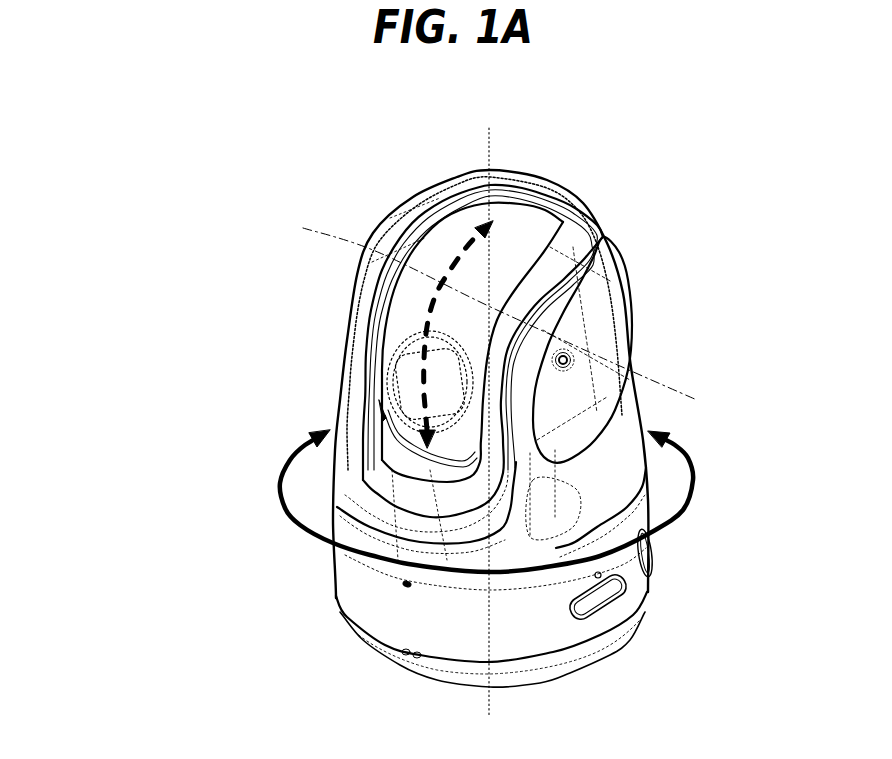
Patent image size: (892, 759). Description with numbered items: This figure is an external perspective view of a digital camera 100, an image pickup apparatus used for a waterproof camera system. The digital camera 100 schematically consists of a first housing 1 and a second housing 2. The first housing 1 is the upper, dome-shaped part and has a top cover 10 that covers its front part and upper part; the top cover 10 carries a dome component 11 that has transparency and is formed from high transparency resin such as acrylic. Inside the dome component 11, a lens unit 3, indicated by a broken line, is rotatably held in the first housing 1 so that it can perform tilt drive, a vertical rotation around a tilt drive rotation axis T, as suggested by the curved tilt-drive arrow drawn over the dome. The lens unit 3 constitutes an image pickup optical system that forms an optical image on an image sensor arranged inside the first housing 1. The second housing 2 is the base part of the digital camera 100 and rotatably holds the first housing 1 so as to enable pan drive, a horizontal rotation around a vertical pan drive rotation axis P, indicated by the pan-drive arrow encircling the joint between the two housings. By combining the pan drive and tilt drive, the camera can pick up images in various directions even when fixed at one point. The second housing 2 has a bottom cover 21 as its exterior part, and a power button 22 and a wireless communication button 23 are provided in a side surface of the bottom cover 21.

The digital camera 100 is at (659, 141).
The first housing 1 is at (708, 175).
The second housing 2 is at (708, 467).
The top cover 10 is at (373, 272).
The dome component 11 is at (403, 316).
The lens unit 3 is at (400, 368).
The bottom cover 21 is at (368, 602).
The power button 22 is at (597, 598).
The wireless communication button 23 is at (647, 553).
The pan drive rotation axis P is at (488, 404).
The tilt drive rotation axis T is at (457, 250).